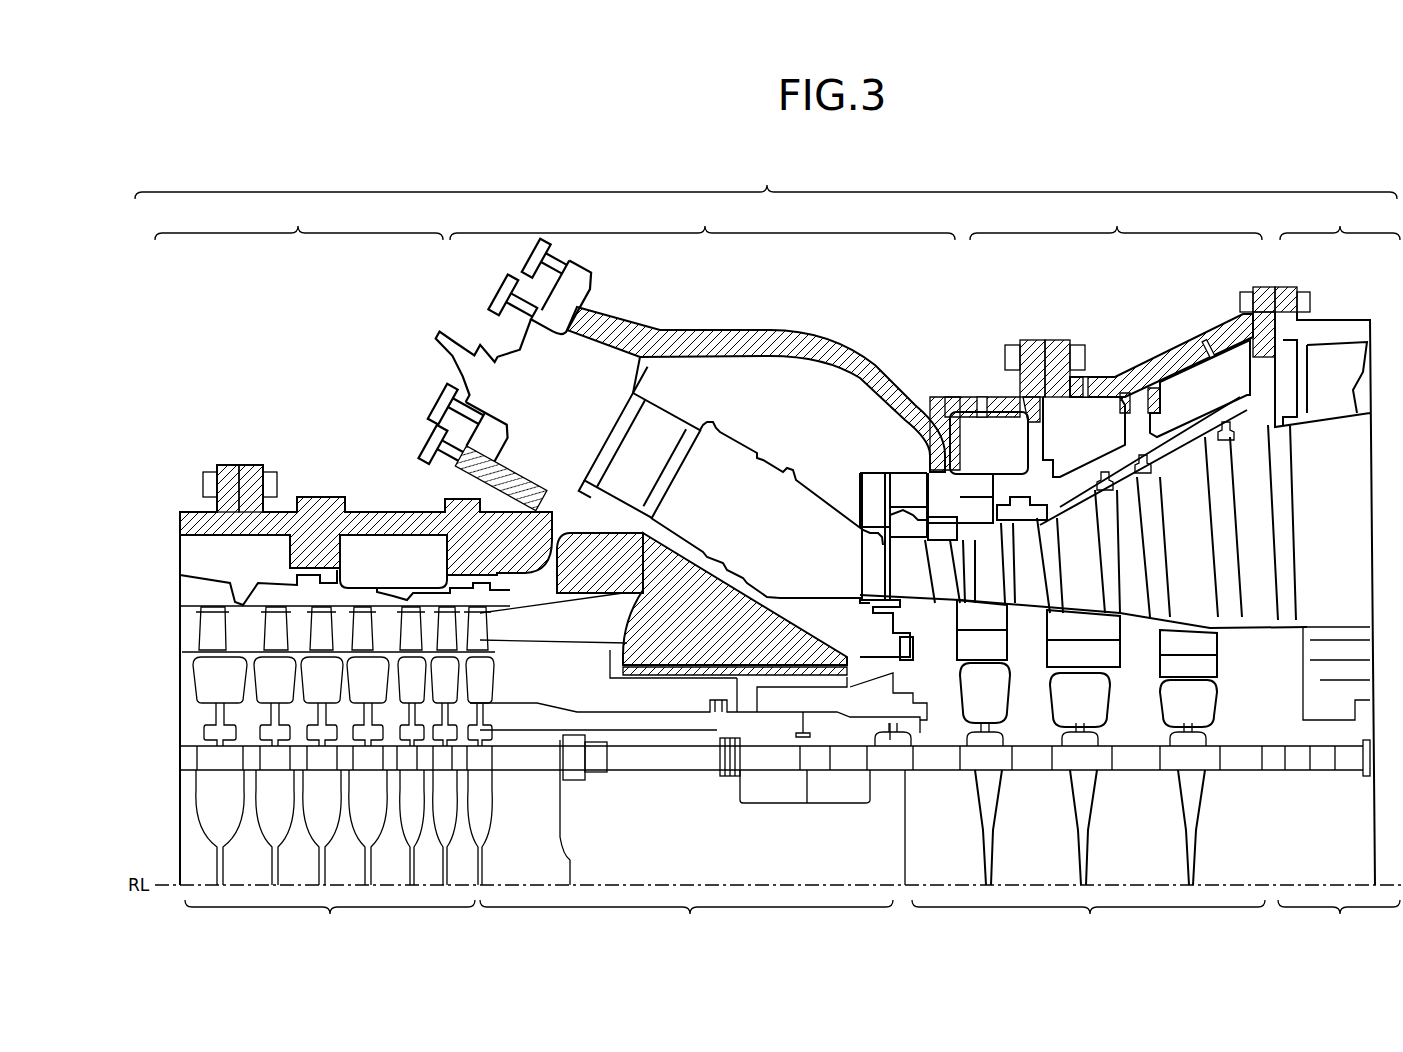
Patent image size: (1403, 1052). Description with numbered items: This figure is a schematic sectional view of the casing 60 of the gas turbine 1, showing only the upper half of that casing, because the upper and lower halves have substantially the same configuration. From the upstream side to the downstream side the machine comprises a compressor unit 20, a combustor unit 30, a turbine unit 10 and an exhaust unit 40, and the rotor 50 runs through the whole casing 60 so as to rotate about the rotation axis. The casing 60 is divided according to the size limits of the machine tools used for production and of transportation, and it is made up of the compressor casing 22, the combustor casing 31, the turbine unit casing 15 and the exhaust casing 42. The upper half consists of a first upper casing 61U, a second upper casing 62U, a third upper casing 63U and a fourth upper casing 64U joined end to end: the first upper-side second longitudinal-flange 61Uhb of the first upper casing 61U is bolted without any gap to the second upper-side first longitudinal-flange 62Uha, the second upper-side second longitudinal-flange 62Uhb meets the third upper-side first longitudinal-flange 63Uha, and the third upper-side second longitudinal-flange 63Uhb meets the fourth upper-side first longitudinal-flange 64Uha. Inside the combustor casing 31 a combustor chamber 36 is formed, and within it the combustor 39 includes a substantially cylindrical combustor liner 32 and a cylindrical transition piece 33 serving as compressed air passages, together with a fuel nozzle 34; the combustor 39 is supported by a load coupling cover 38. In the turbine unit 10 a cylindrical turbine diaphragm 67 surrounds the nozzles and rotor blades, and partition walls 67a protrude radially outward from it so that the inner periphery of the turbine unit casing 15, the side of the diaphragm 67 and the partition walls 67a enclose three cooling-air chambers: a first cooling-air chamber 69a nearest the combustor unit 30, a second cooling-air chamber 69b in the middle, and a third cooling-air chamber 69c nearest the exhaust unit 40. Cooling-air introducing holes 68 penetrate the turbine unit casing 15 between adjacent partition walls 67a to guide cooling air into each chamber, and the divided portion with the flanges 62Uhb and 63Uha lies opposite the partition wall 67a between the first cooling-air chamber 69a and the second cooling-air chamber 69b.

The gas turbine 1 is at (1306, 176).
The turbine unit 10 is at (1088, 923).
The turbine unit casing 15 is at (1116, 223).
The compressor unit 20 is at (330, 923).
The compressor casing 22 is at (299, 223).
The combustor unit 30 is at (686, 923).
The combustor casing 31 is at (702, 223).
The combustor liner 32 is at (672, 400).
The transition piece 33 is at (742, 430).
The fuel nozzle 34 is at (634, 390).
The combustor chamber 36 is at (732, 342).
The load coupling cover 38 is at (612, 590).
The combustor 39 is at (718, 416).
The exhaust unit 40 is at (1339, 923).
The exhaust casing 42 is at (1340, 223).
The rotor 50 is at (180, 752).
The casing 60 is at (766, 181).
The first upper casing 61U is at (180, 508).
The first upper-side second longitudinal-flange 61Uhb is at (228, 462).
The second upper casing 62U is at (386, 512).
The second upper-side first longitudinal-flange 62Uha is at (252, 465).
The second upper-side second longitudinal-flange 62Uhb is at (1030, 340).
The third upper casing 63U is at (1138, 380).
The third upper-side first longitudinal-flange 63Uha is at (1056, 340).
The third upper-side second longitudinal-flange 63Uhb is at (1262, 290).
The fourth upper casing 64U is at (1330, 322).
The fourth upper-side first longitudinal-flange 64Uha is at (1289, 288).
The turbine diaphragm 67 is at (1030, 470).
The partition wall 67a is at (1020, 436).
The cooling-air introducing hole 68 is at (982, 400).
The first cooling-air chamber 69a is at (958, 432).
The second cooling-air chamber 69b is at (1108, 405).
The third cooling-air chamber 69c is at (1178, 400).